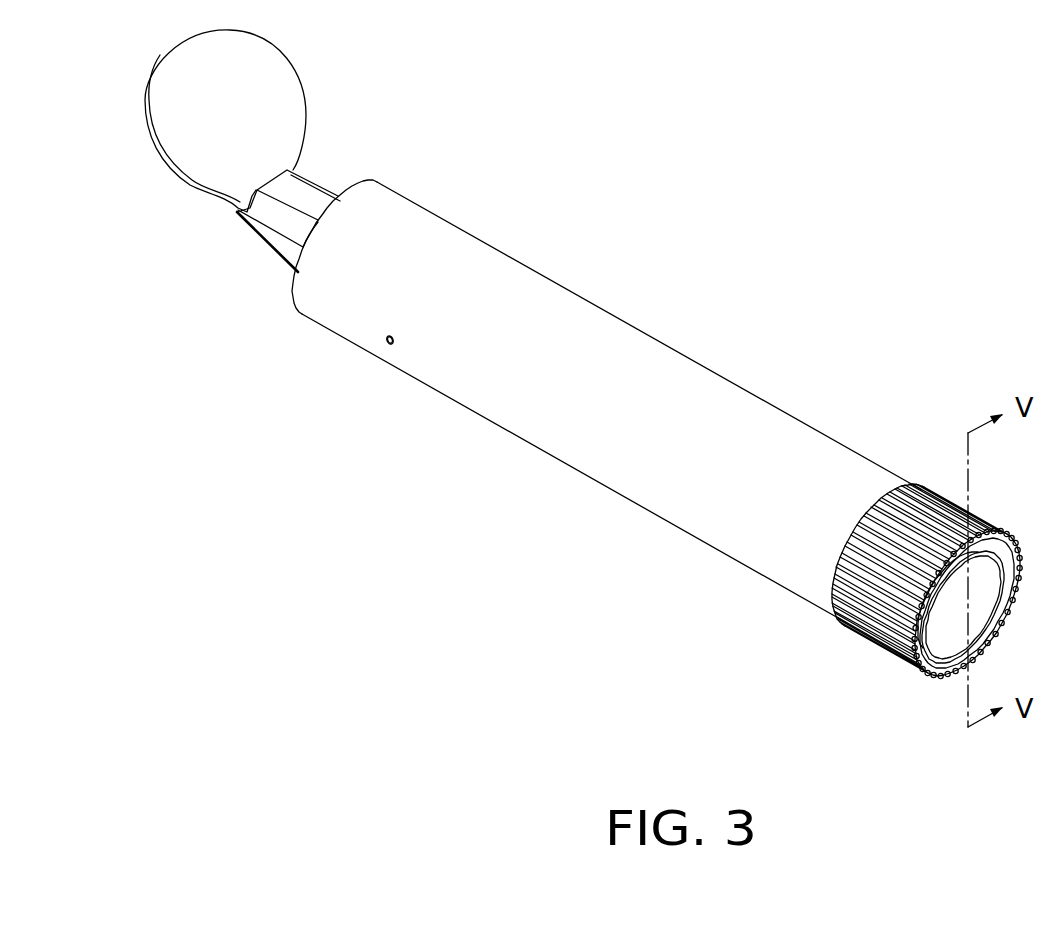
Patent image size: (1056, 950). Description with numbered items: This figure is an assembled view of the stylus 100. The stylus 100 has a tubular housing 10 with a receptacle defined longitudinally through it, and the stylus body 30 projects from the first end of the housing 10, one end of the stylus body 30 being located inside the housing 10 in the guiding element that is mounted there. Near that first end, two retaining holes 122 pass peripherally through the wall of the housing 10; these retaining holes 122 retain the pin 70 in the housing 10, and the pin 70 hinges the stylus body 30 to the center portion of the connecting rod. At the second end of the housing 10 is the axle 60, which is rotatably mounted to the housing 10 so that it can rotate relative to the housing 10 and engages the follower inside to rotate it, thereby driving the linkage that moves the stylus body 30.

The stylus 100 is at (583, 361).
The housing 10 is at (648, 398).
The stylus body 30 is at (268, 98).
The axle 60 is at (873, 640).
The pin 70 is at (388, 342).
The retaining holes 122 is at (396, 350).